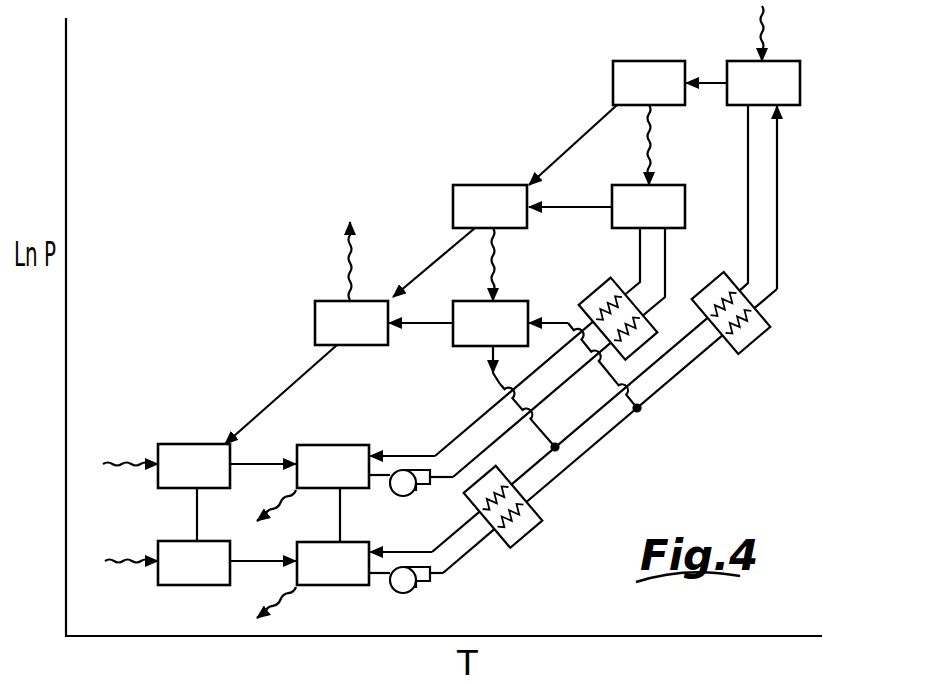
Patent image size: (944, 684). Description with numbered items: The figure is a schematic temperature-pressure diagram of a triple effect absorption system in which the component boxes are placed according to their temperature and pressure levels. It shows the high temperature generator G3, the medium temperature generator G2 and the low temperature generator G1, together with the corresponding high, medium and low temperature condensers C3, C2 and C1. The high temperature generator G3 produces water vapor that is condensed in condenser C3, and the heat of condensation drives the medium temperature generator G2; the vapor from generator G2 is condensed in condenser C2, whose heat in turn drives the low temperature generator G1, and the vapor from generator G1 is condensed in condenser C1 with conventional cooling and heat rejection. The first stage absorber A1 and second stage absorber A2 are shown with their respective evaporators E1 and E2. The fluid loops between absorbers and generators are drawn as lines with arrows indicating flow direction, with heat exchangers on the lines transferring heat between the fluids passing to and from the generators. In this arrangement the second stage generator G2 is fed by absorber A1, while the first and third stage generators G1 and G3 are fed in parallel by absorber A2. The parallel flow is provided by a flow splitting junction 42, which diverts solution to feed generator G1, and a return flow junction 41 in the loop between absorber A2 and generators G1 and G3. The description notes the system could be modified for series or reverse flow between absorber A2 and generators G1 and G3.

The return flow junction 41 is at (555, 447).
The flow splitting junction 42 is at (637, 408).
The low temperature condenser C1 is at (351, 323).
The medium temperature condenser C2 is at (490, 206).
The high temperature condenser C3 is at (649, 83).
The low temperature generator G1 is at (490, 323).
The medium temperature generator G2 is at (648, 206).
The high temperature generator G3 is at (763, 83).
The first stage evaporator E1 is at (194, 466).
The second stage evaporator E2 is at (194, 563).
The first stage absorber A1 is at (333, 466).
The second stage absorber A2 is at (333, 563).